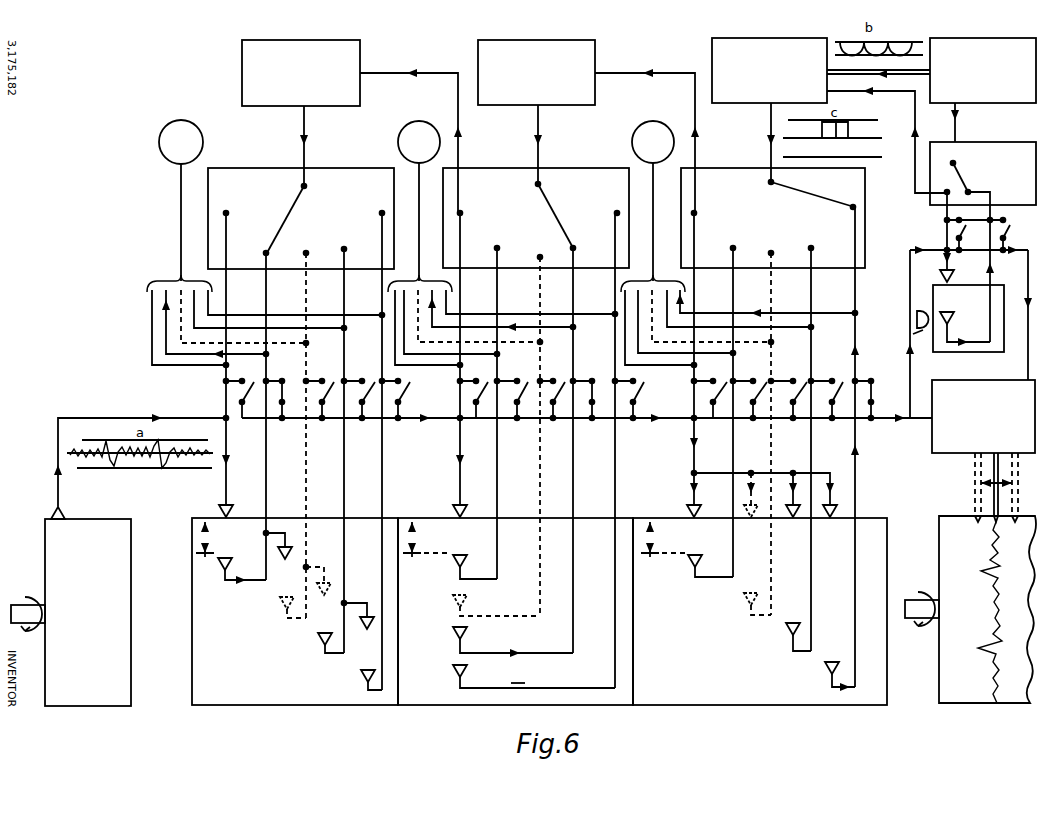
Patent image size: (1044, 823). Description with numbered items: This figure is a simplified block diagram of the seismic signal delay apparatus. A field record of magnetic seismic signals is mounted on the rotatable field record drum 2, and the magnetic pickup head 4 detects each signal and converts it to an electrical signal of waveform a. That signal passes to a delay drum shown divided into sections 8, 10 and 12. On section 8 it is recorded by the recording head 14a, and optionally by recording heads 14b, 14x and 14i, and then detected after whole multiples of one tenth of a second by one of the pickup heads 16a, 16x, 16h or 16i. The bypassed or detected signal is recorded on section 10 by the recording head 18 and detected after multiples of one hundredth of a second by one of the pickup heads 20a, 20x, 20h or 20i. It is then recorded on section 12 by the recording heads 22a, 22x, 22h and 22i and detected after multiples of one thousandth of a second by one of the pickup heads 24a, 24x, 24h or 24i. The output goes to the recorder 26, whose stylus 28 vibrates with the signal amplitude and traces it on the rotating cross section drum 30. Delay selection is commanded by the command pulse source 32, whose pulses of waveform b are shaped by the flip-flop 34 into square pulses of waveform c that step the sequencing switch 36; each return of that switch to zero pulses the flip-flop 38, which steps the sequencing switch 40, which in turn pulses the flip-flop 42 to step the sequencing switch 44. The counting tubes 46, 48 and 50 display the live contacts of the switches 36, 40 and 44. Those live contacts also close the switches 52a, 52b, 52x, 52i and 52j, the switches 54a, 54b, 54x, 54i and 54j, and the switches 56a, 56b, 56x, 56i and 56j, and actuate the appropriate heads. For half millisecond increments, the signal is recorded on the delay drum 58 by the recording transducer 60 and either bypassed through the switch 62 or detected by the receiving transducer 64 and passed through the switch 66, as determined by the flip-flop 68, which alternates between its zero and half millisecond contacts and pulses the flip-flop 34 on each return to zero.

The field record drum 2 is at (120, 672).
The magnetic pickup head 4 is at (65, 513).
The section of delay drum 8 is at (191, 683).
The section of delay drum 10 is at (452, 698).
The section of delay drum 12 is at (768, 698).
The magnetic recording head 14a is at (220, 508).
The magnetic recording head 14b is at (296, 560).
The magnetic recording head 14x is at (330, 597).
The magnetic recording head 14i is at (373, 631).
The magnetic pickup head 16a is at (231, 571).
The magnetic pickup head 16x is at (282, 604).
The magnetic pickup head 16h is at (320, 638).
The magnetic pickup head 16i is at (361, 675).
The magnetic recording head 18 is at (453, 508).
The magnetic pickup head 20a is at (452, 565).
The magnetic pickup head 20x is at (452, 601).
The magnetic pickup head 20h is at (452, 632).
The magnetic pickup head 20i is at (452, 668).
The magnetic recording head 22a is at (688, 506).
The magnetic recording head 22x is at (755, 518).
The magnetic recording head 22h is at (797, 518).
The magnetic recording head 22i is at (834, 518).
The magnetic pickup head 24a is at (688, 563).
The magnetic pickup head 24x is at (744, 603).
The magnetic pickup head 24h is at (786, 635).
The magnetic pickup head 24i is at (825, 668).
The recorder 26 is at (1005, 383).
The stylus 28 is at (990, 479).
The cross section drum 30 is at (957, 689).
The command pulse source 32 is at (1012, 100).
The flip-flop 34 is at (722, 57).
The sequencing switch 36 is at (852, 190).
The flip-flop 38 is at (592, 58).
The sequencing switch 40 is at (570, 180).
The flip-flop 42 is at (360, 57).
The sequencing switch 44 is at (335, 180).
The counting tube 46 is at (633, 129).
The counting tube 48 is at (400, 128).
The counting tube 50 is at (168, 129).
The switch 52a is at (723, 378).
The switch 52b is at (763, 378).
The switch 52x is at (800, 378).
The switch 52i is at (837, 378).
The switch 52j is at (880, 369).
The switch 54a is at (489, 378).
The switch 54b is at (527, 378).
The switch 54x is at (566, 378).
The switch 54i is at (599, 378).
The switch 54j is at (637, 366).
The switch 56a is at (255, 378).
The switch 56b is at (295, 378).
The switch 56x is at (334, 378).
The switch 56i is at (369, 378).
The switch 56j is at (402, 366).
The magnetic delay drum 58 is at (1010, 326).
The recording transducer 60 is at (940, 277).
The switch 62 is at (971, 235).
The receiving transducer 64 is at (953, 318).
The switch 66 is at (1015, 235).
The flip-flop 68 is at (960, 151).